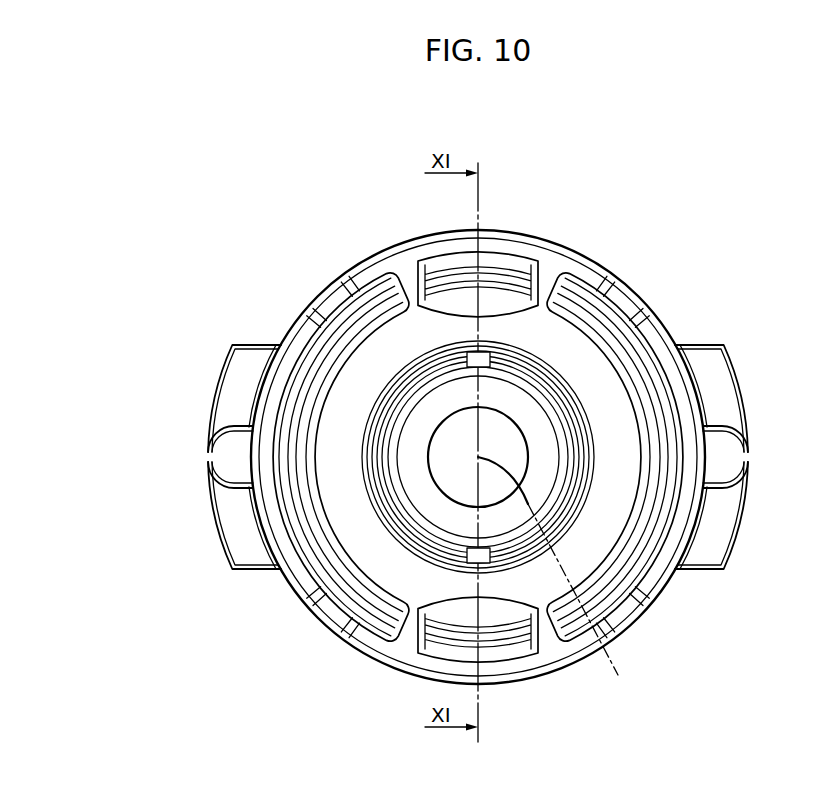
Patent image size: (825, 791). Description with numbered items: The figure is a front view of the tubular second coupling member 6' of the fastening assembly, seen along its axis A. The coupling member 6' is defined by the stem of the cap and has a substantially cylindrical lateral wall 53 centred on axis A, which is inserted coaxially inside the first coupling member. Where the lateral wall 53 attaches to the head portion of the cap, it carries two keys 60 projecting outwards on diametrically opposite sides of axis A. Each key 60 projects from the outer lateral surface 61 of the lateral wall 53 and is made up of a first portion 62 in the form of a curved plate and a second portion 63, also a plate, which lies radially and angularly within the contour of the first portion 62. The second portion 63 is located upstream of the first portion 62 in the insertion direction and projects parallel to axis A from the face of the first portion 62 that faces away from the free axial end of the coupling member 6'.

The second coupling member 6' is at (478, 411).
The lateral wall 53 is at (529, 257).
The outer lateral surface 61 is at (661, 316).
The key 60 is at (740, 378).
The first portion 62 is at (710, 538).
The second portion 63 is at (724, 458).
The axis A is at (558, 580).